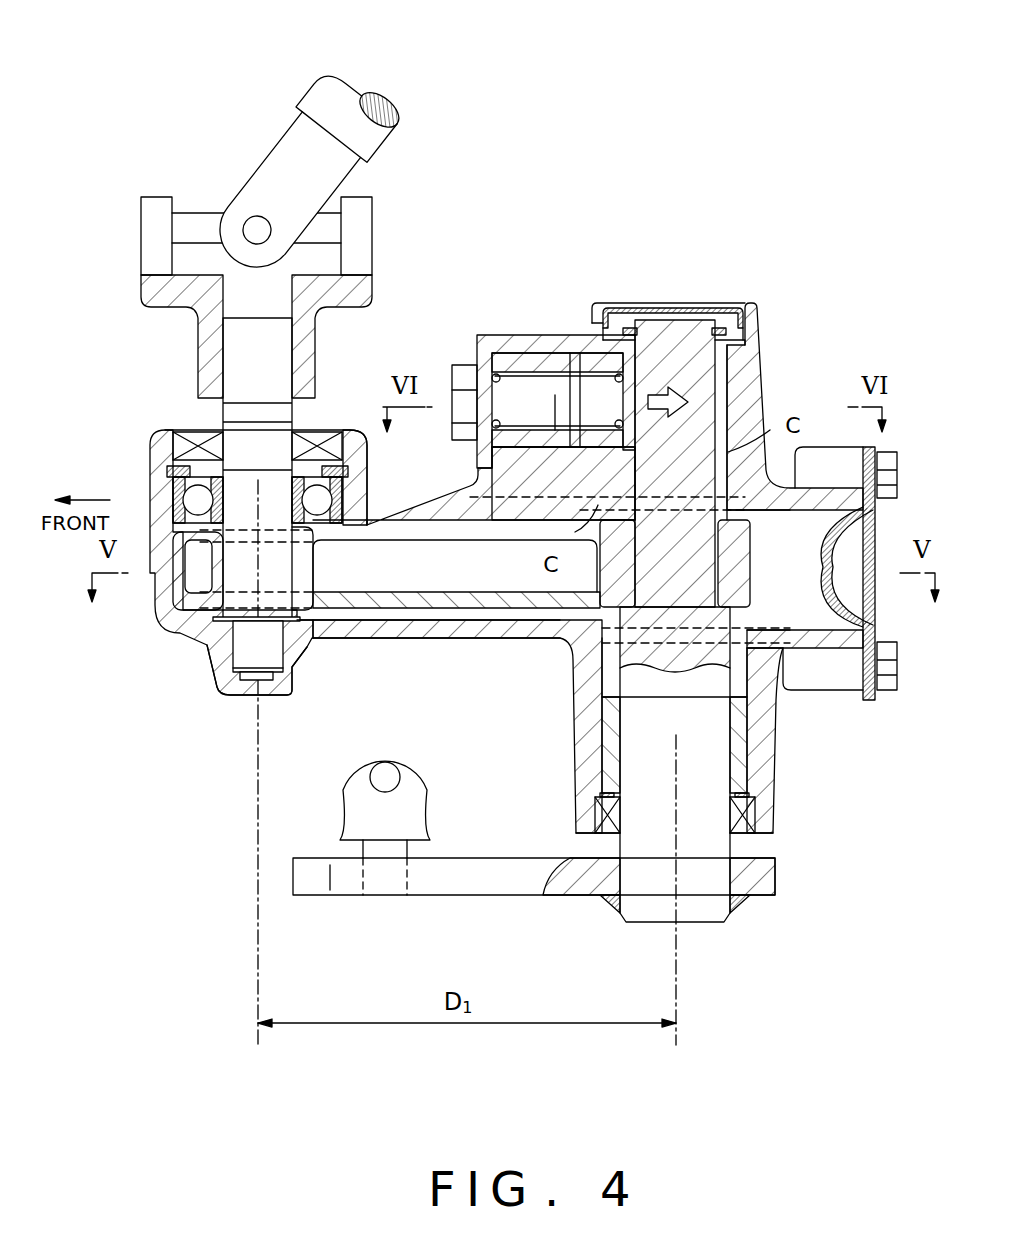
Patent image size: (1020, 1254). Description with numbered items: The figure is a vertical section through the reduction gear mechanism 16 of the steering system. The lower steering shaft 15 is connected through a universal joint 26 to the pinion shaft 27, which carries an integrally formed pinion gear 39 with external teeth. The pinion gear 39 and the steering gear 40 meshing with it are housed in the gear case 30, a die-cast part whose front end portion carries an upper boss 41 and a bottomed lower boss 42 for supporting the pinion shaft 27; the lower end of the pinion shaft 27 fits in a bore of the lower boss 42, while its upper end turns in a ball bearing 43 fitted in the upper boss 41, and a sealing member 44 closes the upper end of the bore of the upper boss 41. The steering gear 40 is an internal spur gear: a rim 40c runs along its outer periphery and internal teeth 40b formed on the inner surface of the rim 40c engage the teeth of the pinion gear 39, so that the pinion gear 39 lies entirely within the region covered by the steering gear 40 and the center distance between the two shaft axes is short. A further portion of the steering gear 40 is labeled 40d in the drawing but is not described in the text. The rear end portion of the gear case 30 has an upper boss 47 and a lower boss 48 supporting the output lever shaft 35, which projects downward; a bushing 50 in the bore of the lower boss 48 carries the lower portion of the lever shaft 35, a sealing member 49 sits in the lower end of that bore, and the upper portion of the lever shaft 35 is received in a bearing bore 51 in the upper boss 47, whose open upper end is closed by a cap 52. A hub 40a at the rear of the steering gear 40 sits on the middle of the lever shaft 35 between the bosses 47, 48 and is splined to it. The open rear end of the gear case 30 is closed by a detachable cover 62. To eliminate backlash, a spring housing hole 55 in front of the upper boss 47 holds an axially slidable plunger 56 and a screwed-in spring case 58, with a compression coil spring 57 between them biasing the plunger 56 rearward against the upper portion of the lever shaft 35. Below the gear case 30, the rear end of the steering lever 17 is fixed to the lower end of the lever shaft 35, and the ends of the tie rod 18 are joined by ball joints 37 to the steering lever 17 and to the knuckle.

The lower steering shaft 15 is at (318, 92).
The reduction gear mechanism 16 is at (473, 150).
The steering lever 17 is at (305, 895).
The tie rod 18 is at (400, 777).
The universal joint 26 is at (234, 194).
The pinion shaft 27 is at (235, 407).
The gear case 30 is at (425, 506).
The output lever shaft 35 is at (700, 905).
The ball joint 37 is at (417, 750).
The pinion gear 39 is at (305, 563).
The steering gear 40 is at (486, 600).
The hub 40a is at (735, 582).
The internal teeth 40b is at (212, 640).
The rim 40c is at (188, 598).
The arm portion 40d is at (376, 605).
The upper boss 41 is at (160, 447).
The lower boss 42 is at (272, 690).
The ball bearing 43 is at (195, 502).
The sealing member 44 is at (195, 432).
The upper boss 47 is at (764, 345).
The lower boss 48 is at (578, 758).
The sealing member 49 is at (752, 812).
The bearing metal (bushing) 50 is at (748, 765).
The bearing bore 51 is at (735, 405).
The cap 52 is at (672, 303).
The spring housing hole 55 is at (518, 345).
The plunger 56 is at (588, 362).
The compression coil spring 57 is at (563, 483).
The spring case 58 is at (508, 355).
The cover 62 is at (835, 573).